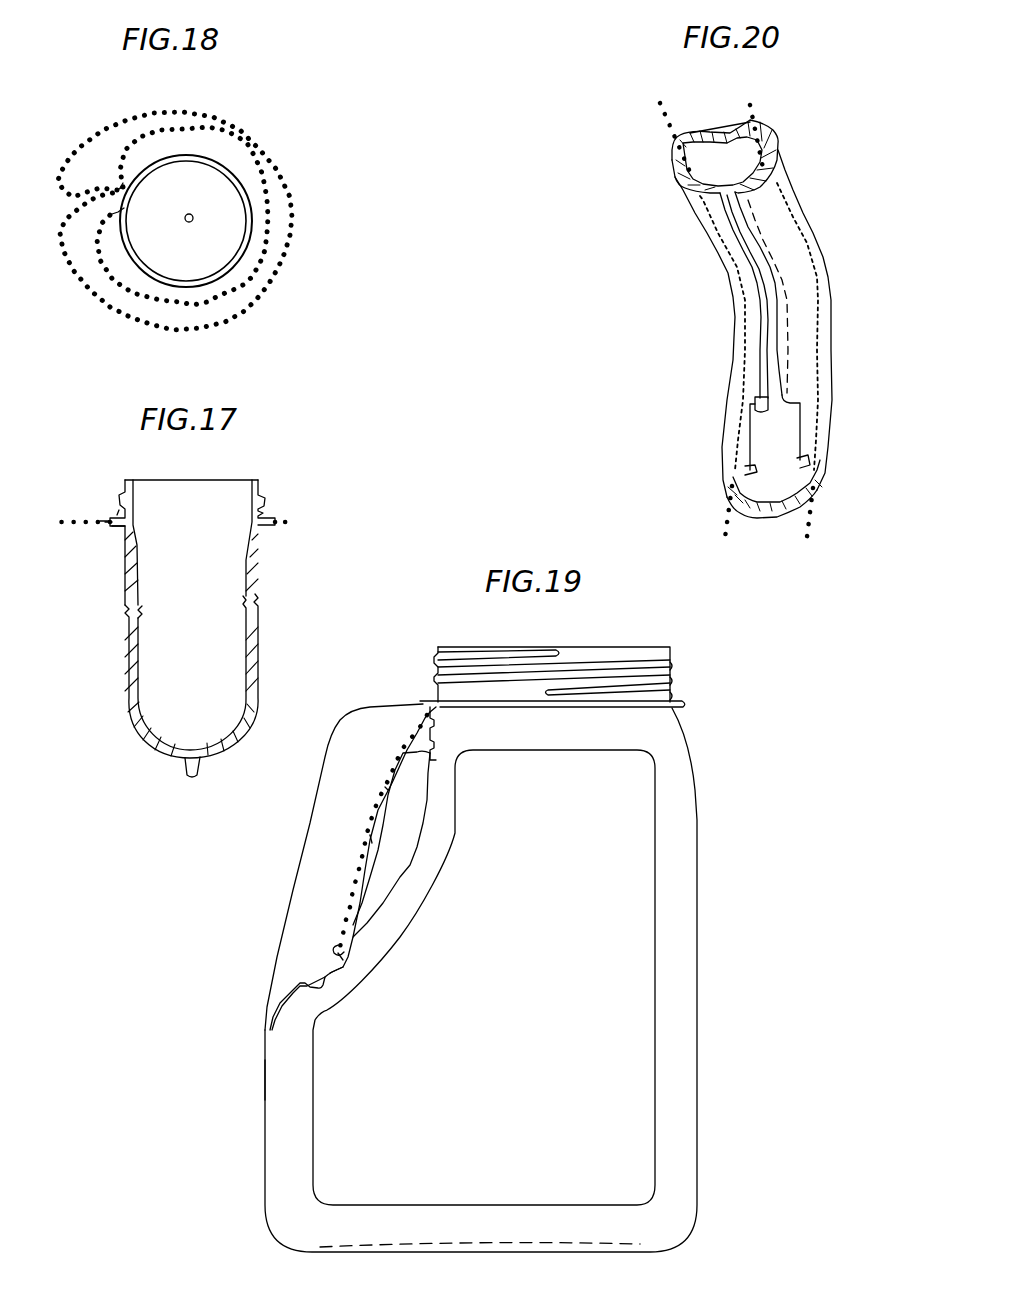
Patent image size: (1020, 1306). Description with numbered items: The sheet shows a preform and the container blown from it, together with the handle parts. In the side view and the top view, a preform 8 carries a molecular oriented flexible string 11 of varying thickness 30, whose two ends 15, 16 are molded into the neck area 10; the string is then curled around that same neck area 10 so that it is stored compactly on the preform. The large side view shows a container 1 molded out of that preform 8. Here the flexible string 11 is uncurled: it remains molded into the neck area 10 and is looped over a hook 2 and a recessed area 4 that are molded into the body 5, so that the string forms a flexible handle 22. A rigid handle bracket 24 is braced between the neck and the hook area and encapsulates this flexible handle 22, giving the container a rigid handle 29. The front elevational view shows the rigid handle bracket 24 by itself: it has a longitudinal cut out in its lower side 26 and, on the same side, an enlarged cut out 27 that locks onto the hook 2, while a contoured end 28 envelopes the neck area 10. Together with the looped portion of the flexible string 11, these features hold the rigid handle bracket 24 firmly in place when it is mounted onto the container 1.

In FIG. 19, the container 1 is at (677, 747).
In FIG. 19, the hook 2 is at (336, 943).
In FIG. 19, the recessed area 4 is at (415, 850).
In FIG. 19, the body 5 is at (268, 1085).
In FIG. 18, the preform 8 is at (128, 219).
In FIG. 17, the preform 8 is at (133, 565).
In FIG. 18, the neck area 10 is at (146, 178).
In FIG. 17, the neck area 10 is at (117, 516).
In FIG. 19, the neck area 10 is at (432, 707).
In FIG. 18, the flexible string 11 is at (270, 160).
In FIG. 17, the flexible string 11 is at (284, 520).
In FIG. 20, the flexible string 11 is at (751, 106).
In FIG. 19, the flexible string 11 is at (358, 873).
In FIG. 18, the end of flexible string 15 is at (127, 186).
In FIG. 17, the end of flexible string 15 is at (108, 527).
In FIG. 18, the end of flexible string 16 is at (119, 219).
In FIG. 17, the end of flexible string 16 is at (109, 528).
In FIG. 19, the end of flexible string 16 is at (414, 717).
In FIG. 19, the flexible handle 22 is at (364, 842).
In FIG. 20, the rigid handle bracket 24 is at (830, 350).
In FIG. 19, the rigid handle bracket 24 is at (297, 890).
In FIG. 20, the longitudinal cut out in lower side 26 is at (762, 410).
In FIG. 20, the enlarged cut out 27 is at (758, 468).
In FIG. 20, the contoured end 28 is at (708, 134).
In FIG. 19, the rigid handle 29 is at (279, 953).
In FIG. 17, the varying thickness 30 is at (108, 520).
In FIG. 19, the varying thickness 30 is at (383, 790).